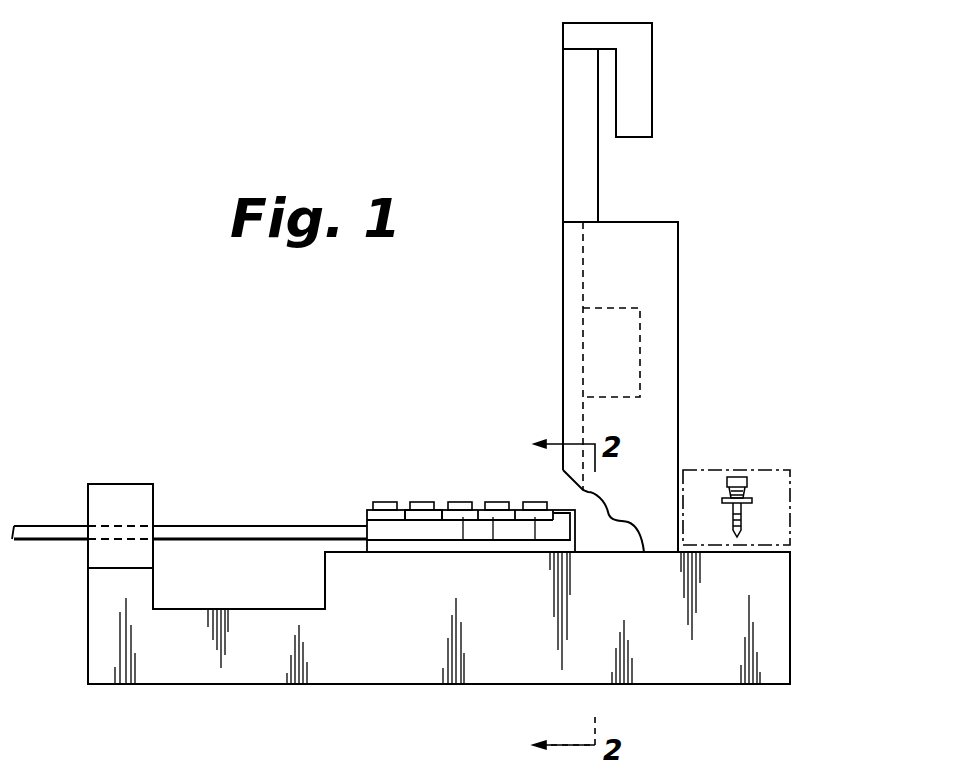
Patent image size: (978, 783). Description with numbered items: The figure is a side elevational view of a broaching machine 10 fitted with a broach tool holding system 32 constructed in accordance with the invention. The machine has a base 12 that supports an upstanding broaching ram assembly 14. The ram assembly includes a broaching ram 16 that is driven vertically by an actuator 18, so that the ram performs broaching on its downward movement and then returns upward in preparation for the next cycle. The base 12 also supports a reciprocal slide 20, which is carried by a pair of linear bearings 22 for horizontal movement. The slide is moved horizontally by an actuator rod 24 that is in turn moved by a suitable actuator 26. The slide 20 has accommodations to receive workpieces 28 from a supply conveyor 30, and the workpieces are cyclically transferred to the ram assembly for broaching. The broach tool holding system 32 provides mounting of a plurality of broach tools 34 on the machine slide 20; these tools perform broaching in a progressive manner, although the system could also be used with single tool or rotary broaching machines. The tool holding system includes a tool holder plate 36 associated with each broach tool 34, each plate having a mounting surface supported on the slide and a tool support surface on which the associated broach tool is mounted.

The broaching machine 10 is at (790, 388).
The base 12 is at (415, 667).
The broaching ram assembly 14 is at (707, 283).
The broaching ram 16 is at (680, 343).
The actuator 18 is at (652, 108).
The reciprocal slide 20 is at (373, 527).
The linear bearings 22 is at (402, 552).
The actuator rod 24 is at (230, 526).
The actuator 26 is at (120, 484).
The workpieces 28 is at (753, 502).
The supply conveyor 30 is at (790, 513).
The broach tool holding system 32 is at (440, 495).
The broach tools 34 is at (422, 502).
The tool holder plate 36 is at (535, 517).